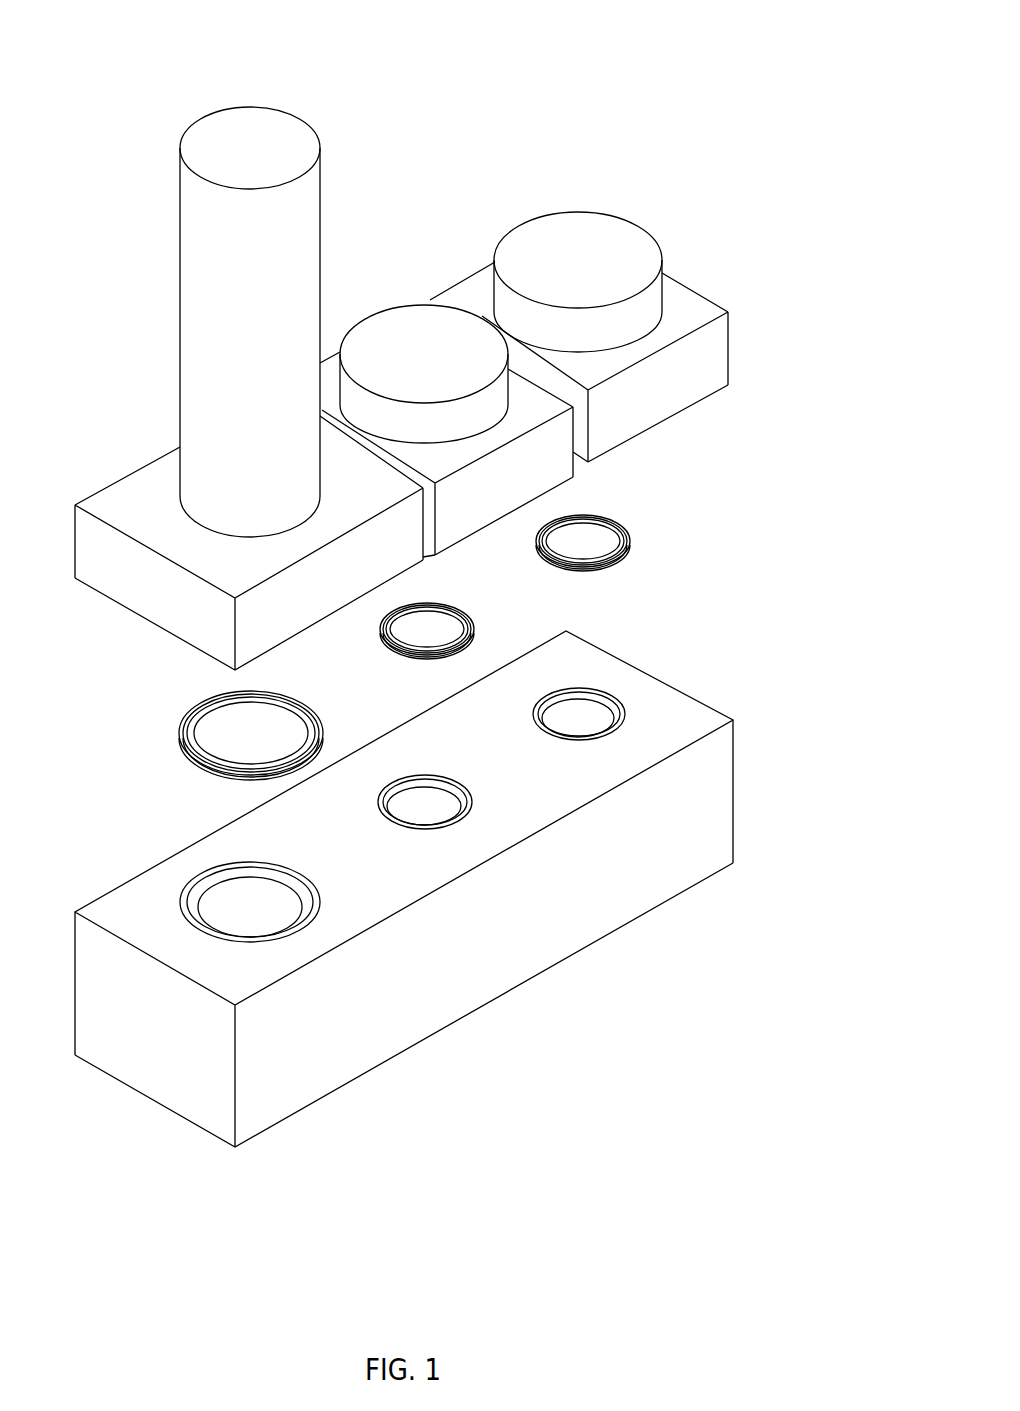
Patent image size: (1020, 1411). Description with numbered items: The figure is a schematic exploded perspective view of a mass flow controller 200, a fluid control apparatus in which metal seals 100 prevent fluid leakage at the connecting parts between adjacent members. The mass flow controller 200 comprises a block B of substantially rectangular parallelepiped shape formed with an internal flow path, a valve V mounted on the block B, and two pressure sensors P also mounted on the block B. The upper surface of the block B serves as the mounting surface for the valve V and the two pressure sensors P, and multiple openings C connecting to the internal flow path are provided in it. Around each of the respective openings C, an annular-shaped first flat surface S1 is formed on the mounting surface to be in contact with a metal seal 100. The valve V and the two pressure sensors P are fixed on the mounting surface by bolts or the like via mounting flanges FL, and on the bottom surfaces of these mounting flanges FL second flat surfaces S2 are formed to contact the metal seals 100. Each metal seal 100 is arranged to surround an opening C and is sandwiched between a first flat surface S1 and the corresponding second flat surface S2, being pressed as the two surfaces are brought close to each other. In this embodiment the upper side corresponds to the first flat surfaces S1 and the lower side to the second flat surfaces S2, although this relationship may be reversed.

The mass flow controller 200 is at (634, 102).
The valve V is at (250, 103).
The pressure sensor P is at (396, 288).
The mounting flange FL is at (725, 400).
The second flat surface S2 is at (107, 598).
The metal seal 100 is at (172, 728).
The block B is at (142, 1094).
The first flat surface S1 is at (192, 905).
The opening C is at (248, 907).